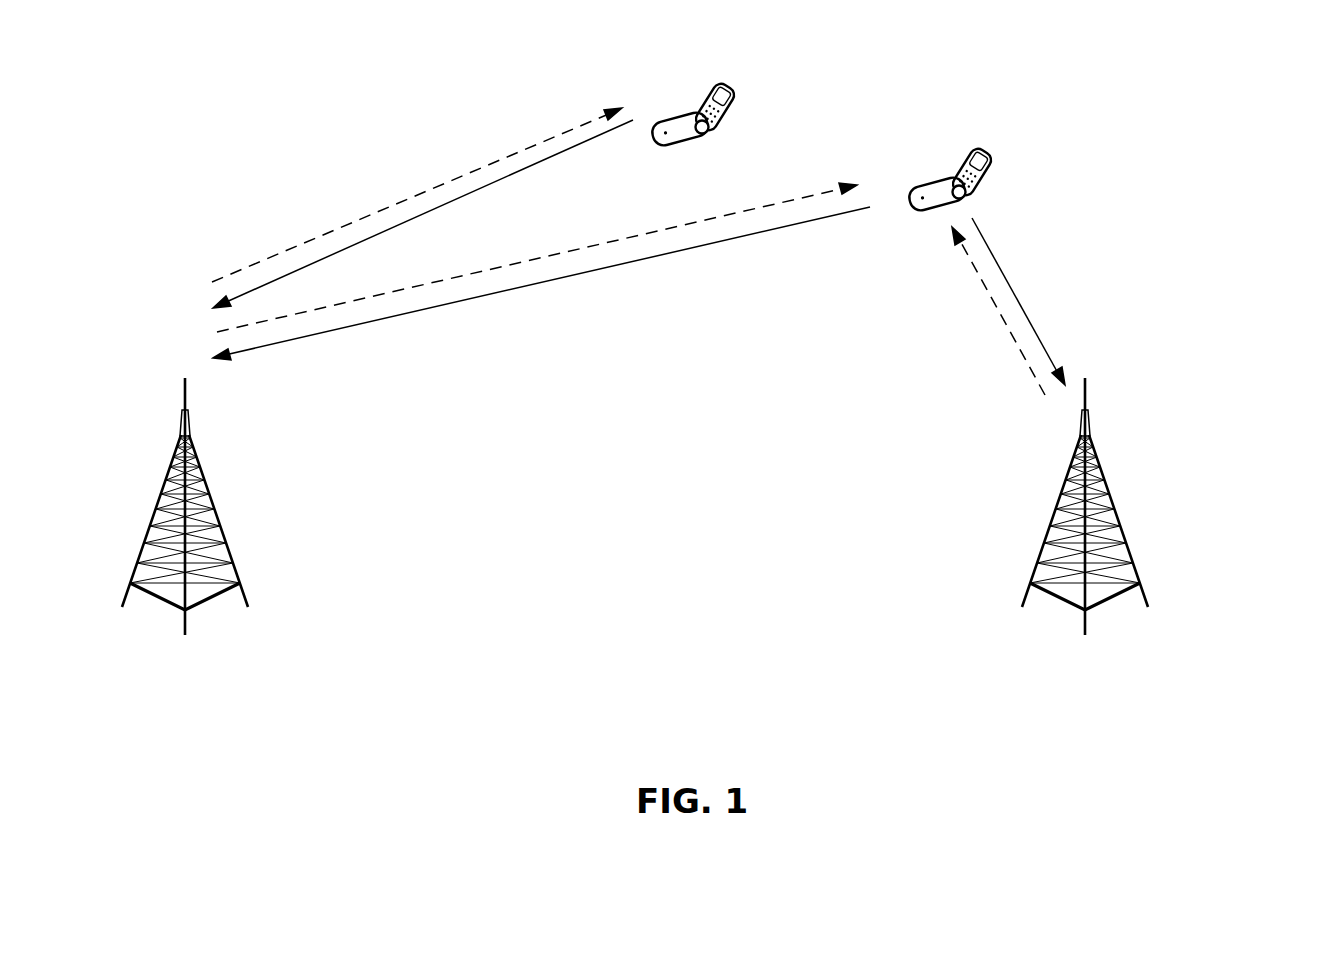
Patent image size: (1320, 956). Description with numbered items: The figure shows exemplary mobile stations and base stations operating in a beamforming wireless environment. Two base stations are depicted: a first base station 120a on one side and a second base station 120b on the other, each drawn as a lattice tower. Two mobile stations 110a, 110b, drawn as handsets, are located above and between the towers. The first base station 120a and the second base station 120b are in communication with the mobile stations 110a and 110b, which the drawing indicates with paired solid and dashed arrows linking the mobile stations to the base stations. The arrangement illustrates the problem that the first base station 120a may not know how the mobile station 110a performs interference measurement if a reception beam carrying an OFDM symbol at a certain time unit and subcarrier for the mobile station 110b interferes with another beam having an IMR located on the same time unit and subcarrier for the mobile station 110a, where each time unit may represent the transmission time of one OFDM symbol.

The mobile station 110a is at (668, 83).
The mobile station 110b is at (909, 168).
The base station BS1 120a is at (265, 613).
The base station BS2 120b is at (1153, 526).